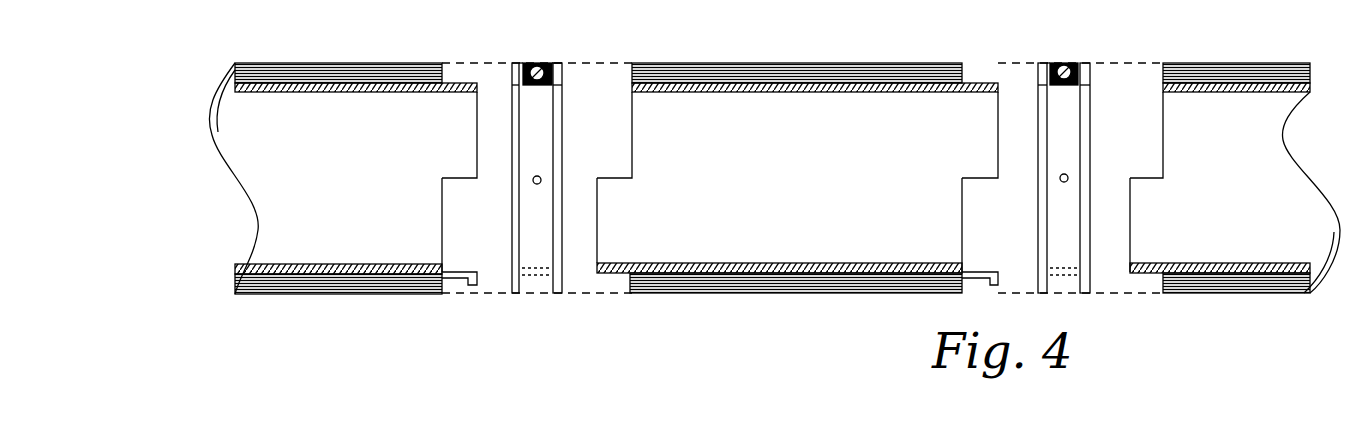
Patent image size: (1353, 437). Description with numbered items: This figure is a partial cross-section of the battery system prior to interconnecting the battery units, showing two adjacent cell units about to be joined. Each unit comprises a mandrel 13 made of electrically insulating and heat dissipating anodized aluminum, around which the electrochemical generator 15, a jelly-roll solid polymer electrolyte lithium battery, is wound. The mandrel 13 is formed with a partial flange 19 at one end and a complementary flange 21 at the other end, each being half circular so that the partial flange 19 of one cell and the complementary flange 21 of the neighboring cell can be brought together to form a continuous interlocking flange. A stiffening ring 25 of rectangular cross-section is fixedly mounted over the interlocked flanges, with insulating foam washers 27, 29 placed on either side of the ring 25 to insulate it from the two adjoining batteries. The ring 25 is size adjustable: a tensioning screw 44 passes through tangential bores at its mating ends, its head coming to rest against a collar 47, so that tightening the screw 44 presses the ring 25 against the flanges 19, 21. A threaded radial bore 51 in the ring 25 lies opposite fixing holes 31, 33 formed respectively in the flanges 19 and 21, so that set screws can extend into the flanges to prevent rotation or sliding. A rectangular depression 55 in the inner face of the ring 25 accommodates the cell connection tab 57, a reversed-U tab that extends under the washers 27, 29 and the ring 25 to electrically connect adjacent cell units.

The mandrel 13 is at (745, 274).
The electrochemical generator 15 is at (820, 80).
The partial flange 19 is at (608, 212).
The complementary flange 21 is at (467, 147).
The stiffening ring 25 is at (1140, 335).
The insulating foam washer 27 is at (1118, 125).
The insulating foam washer 29 is at (512, 175).
The fixing hole 31 is at (612, 274).
The fixing hole 33 is at (455, 92).
The tensioning screw 44 is at (535, 66).
The collar 47 is at (558, 60).
The threaded radial bore 51 is at (541, 180).
The rectangular depression 55 is at (505, 258).
The cell connection tab 57 is at (462, 270).